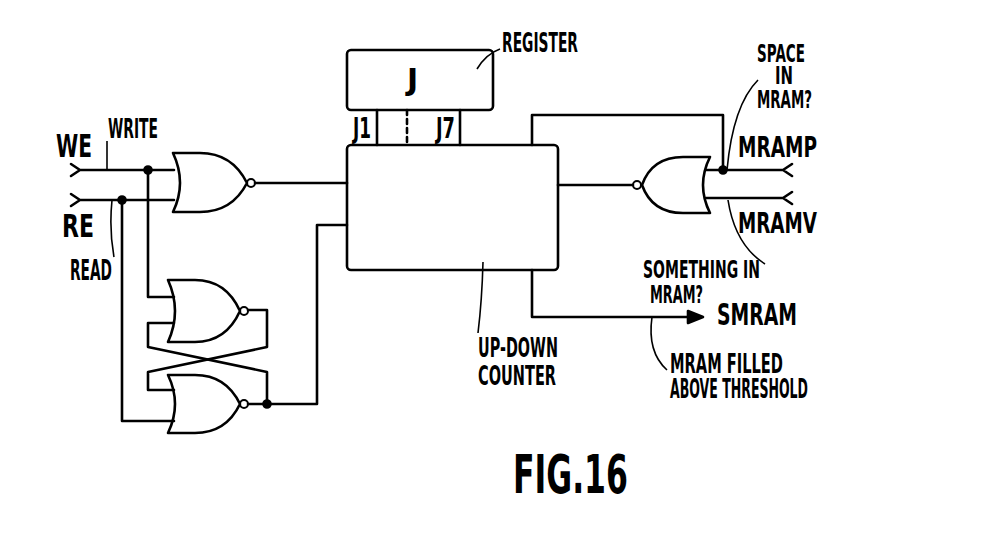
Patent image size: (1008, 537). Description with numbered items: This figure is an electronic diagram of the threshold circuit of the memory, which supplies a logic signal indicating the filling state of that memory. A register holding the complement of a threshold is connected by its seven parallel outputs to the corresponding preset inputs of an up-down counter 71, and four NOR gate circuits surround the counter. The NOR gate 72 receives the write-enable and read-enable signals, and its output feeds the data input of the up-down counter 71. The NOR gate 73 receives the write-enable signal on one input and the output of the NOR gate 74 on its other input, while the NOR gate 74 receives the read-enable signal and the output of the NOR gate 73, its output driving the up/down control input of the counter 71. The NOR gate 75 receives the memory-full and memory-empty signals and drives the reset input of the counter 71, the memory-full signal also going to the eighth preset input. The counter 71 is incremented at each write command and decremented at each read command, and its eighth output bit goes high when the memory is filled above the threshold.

The up-down counter 71 is at (433, 250).
The NOR gate circuit 72 is at (210, 180).
The NOR gate circuit 73 is at (195, 298).
The NOR gate circuit 74 is at (197, 417).
The NOR gate circuit 75 is at (664, 192).